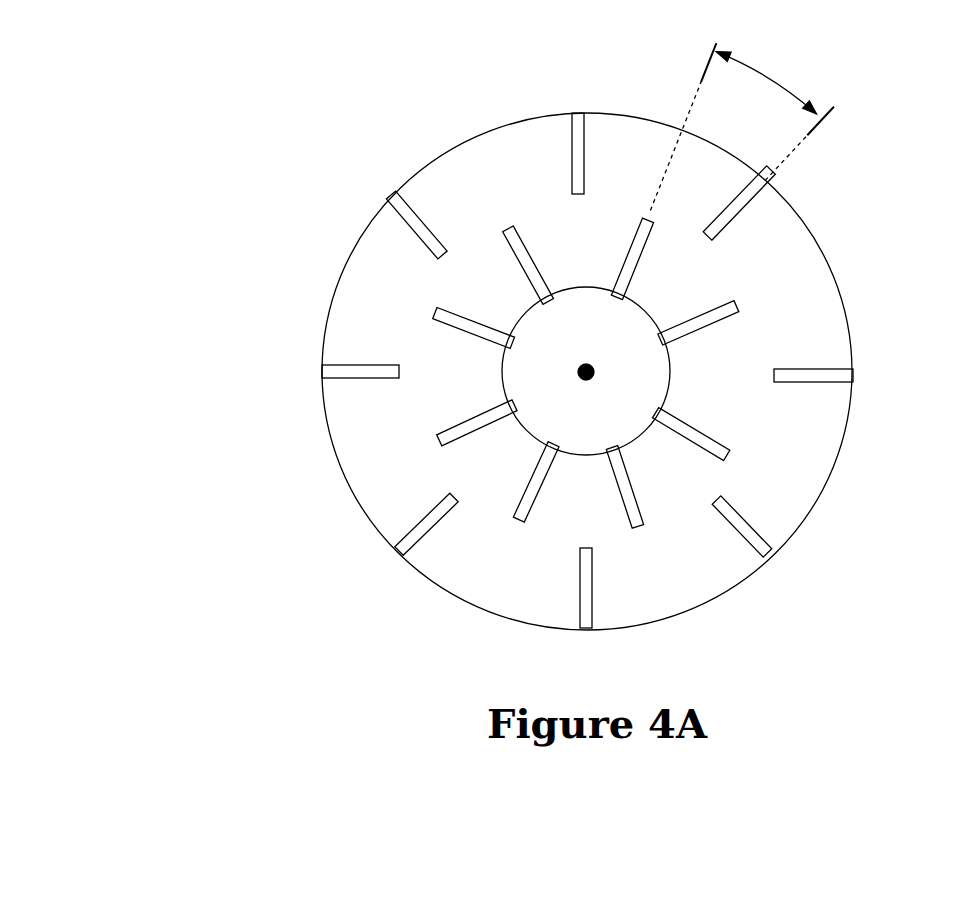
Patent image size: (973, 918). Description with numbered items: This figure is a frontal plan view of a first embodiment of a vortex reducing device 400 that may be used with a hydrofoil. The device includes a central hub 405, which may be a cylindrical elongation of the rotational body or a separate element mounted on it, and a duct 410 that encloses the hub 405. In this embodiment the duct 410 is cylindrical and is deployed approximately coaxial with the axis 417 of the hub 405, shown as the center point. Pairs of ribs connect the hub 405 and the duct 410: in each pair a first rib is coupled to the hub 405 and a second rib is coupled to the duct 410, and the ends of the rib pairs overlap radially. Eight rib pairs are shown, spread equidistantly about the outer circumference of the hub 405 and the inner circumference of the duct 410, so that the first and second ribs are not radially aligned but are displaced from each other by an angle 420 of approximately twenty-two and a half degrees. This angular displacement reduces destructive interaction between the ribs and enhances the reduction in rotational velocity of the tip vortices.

The vortex reducing device 400 is at (150, 167).
The hub 405 is at (668, 395).
The duct 410 is at (843, 292).
The axis 417 is at (586, 382).
The angle 420 is at (770, 74).